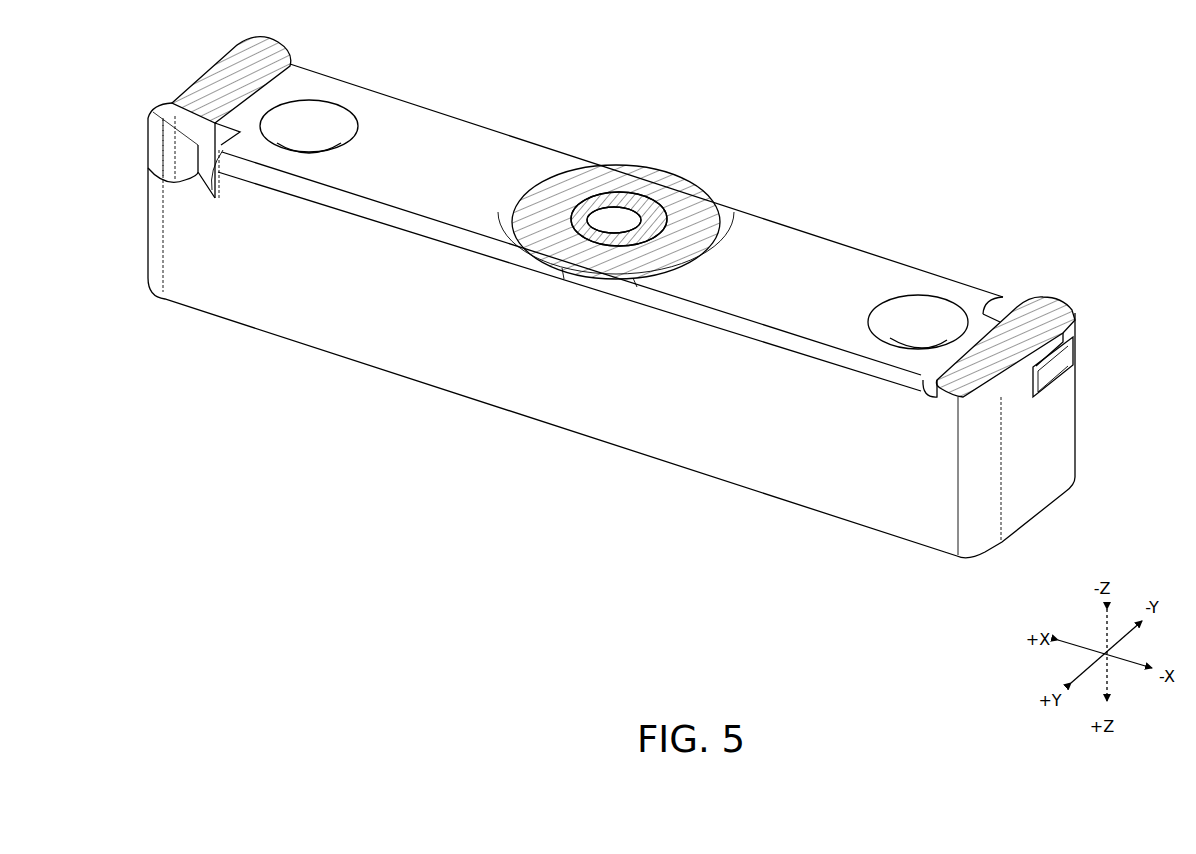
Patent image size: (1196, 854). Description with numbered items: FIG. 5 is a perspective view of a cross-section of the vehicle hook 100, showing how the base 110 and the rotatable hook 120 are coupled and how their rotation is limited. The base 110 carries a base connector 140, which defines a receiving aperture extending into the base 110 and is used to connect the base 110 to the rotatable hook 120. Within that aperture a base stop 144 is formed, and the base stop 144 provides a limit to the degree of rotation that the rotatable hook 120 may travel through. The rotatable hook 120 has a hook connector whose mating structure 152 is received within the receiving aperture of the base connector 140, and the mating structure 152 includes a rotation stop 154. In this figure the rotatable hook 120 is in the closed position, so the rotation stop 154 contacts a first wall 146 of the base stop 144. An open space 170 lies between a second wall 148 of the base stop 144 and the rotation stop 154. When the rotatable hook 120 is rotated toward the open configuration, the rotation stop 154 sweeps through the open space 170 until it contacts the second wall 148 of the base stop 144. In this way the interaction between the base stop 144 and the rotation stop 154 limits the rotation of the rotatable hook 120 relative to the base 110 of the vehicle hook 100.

The vehicle hook 100 is at (1097, 177).
The base 110 is at (1090, 400).
The rotatable hook 120 is at (1090, 290).
The base connector 140 is at (730, 188).
The base stop 144 is at (568, 222).
The first wall 146 is at (587, 240).
The second wall 148 is at (570, 207).
The mating structure 152 is at (670, 244).
The rotation stop 154 is at (653, 199).
The open space 170 is at (618, 192).